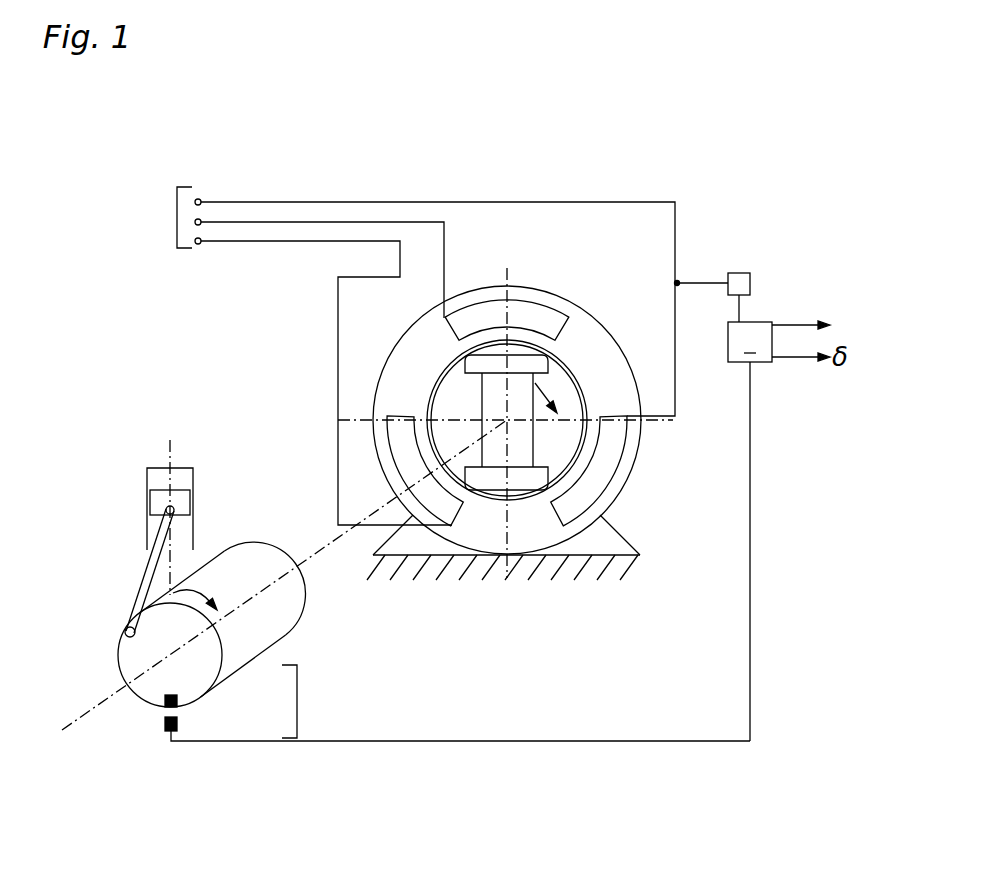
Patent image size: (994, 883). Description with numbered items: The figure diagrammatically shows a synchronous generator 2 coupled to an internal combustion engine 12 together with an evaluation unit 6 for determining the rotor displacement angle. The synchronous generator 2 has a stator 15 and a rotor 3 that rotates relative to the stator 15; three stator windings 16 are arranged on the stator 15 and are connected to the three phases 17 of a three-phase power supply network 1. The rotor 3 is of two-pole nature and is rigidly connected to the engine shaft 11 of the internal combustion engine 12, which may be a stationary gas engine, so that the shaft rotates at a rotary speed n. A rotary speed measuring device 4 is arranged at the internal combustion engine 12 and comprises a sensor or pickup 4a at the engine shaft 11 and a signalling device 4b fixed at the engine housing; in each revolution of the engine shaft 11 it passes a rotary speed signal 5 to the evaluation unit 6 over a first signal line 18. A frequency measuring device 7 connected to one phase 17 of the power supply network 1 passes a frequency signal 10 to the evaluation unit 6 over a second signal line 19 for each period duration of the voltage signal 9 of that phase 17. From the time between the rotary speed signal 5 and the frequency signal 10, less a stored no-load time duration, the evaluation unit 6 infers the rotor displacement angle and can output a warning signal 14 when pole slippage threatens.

The three-phase power supply network 1 is at (168, 218).
The synchronous generator 2 is at (481, 437).
The rotor 3 is at (492, 480).
The rotary speed measuring device 4 is at (297, 700).
The sensor or pickup 4a is at (177, 700).
The signalling device 4b is at (177, 722).
The rotary speed signal 5 is at (760, 551).
The evaluation unit 6 is at (750, 342).
The frequency measuring device 7 is at (742, 275).
The voltage signal 9 is at (702, 272).
The frequency signal 10 is at (759, 305).
The engine shaft 11 is at (138, 652).
The internal combustion engine 12 is at (113, 533).
The warning signal 14 is at (817, 323).
The stator 15 is at (597, 342).
The stator windings 16 is at (523, 315).
The phases 17 is at (270, 202).
The first signal line 18 is at (462, 741).
The second signal line 19 is at (739, 308).